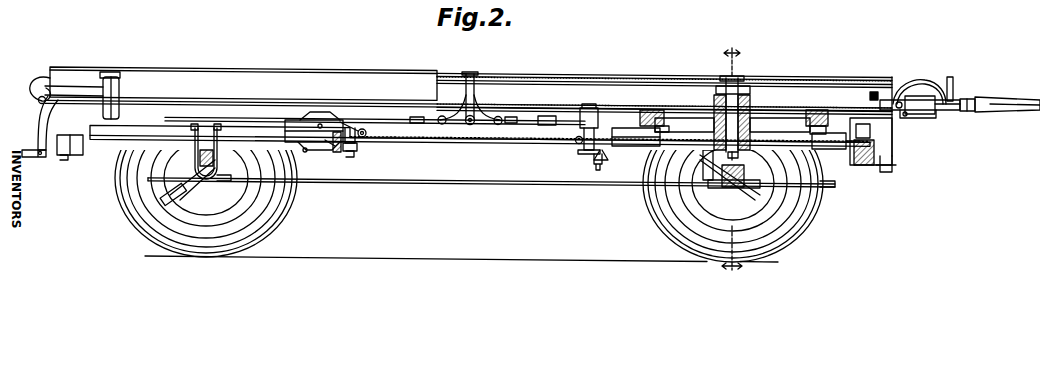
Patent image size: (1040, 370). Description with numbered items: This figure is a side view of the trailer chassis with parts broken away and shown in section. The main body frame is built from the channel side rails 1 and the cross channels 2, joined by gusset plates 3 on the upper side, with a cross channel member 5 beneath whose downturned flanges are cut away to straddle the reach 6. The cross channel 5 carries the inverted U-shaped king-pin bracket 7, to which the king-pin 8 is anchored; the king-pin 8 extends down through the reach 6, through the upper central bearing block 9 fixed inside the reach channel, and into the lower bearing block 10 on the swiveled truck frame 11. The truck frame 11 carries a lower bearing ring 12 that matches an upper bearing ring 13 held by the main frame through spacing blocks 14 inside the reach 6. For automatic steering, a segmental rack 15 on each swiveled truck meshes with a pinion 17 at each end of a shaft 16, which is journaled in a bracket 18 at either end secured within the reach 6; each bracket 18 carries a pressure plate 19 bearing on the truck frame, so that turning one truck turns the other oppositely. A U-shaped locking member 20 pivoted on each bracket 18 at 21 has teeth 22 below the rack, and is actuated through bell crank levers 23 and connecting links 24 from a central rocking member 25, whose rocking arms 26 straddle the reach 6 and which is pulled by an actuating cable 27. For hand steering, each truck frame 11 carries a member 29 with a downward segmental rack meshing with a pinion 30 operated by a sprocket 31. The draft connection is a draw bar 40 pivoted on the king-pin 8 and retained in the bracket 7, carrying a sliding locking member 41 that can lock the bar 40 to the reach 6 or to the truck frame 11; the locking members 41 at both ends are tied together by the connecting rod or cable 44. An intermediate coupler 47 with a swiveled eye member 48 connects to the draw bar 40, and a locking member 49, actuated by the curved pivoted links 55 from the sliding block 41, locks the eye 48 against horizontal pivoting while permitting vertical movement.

The channel side rails 1 is at (325, 74).
The cross channels 2 is at (716, 96).
The gusset plates 3 is at (741, 92).
The cross channel member 5 is at (749, 108).
The reach 6 is at (553, 108).
The king-pin bracket 7 is at (727, 90).
The king-pin 8 is at (738, 150).
The upper central bearing block 9 is at (700, 137).
The lower bearing block 10 is at (752, 130).
The swiveled truck frame 11 is at (814, 146).
The lower bearing ring 12 is at (640, 147).
The upper bearing ring 13 is at (657, 120).
The spacing blocks 14 is at (644, 112).
The segmental rack 15 is at (602, 152).
The shaft 16 is at (492, 144).
The pinion 17 is at (338, 146).
The bracket 18 is at (580, 126).
The pressure plate 19 is at (612, 112).
The U-shaped locking member 20 is at (360, 146).
The pivot 21 is at (368, 134).
The teeth 22 is at (335, 142).
The bell crank levers 23 is at (358, 118).
The connecting links 24 is at (414, 126).
The rocking member 25 is at (468, 125).
The rocking arms 26 is at (480, 97).
The actuating cable 27 is at (498, 78).
The member having vertically disposed segmental rack 29 is at (886, 140).
The pinion 30 is at (831, 150).
The sprocket 31 is at (885, 174).
The draw bar 40 is at (882, 104).
The sliding locking member 41 is at (869, 96).
The connecting rod or cable 44 is at (132, 74).
The intermediate coupler 47 is at (969, 99).
The eye member 48 is at (1012, 112).
The locking member 49 is at (928, 118).
The pivoted links 55 is at (925, 85).